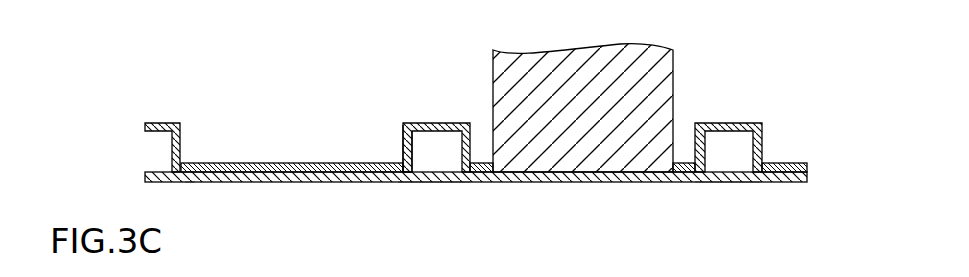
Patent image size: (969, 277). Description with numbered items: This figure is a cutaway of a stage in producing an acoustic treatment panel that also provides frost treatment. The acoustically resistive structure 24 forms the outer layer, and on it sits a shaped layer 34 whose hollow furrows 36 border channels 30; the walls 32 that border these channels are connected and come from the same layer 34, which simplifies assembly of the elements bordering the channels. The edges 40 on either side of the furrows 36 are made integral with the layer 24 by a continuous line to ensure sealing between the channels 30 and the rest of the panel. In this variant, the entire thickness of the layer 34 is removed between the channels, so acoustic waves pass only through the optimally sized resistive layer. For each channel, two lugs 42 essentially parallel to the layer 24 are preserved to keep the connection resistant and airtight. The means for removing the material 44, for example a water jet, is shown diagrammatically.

The acoustically resistive structure 24 is at (283, 183).
The channels 30 is at (432, 143).
The walls 32 is at (181, 152).
The layer 34 is at (287, 163).
The furrows 36 is at (402, 138).
The edges 40 is at (190, 183).
The lugs 42 is at (195, 163).
The means for removing the material 44 is at (592, 56).